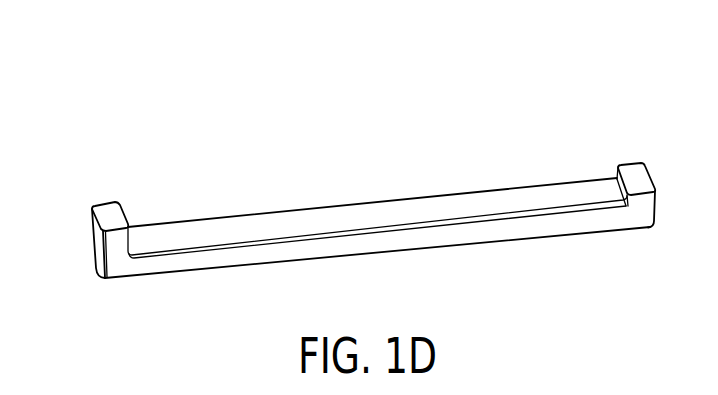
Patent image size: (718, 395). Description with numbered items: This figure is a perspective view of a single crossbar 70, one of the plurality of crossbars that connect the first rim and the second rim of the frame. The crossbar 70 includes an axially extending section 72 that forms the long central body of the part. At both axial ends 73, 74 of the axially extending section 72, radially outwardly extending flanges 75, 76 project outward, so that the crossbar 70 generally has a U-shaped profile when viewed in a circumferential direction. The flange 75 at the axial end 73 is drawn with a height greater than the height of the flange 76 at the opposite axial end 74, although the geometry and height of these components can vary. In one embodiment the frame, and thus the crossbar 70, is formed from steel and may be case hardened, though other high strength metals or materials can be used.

The crossbar 70 is at (261, 211).
The axially extending section 72 is at (412, 205).
The axial end 73 is at (117, 266).
The axial end 74 is at (650, 211).
The radially outwardly extending flange 75 is at (106, 203).
The radially outwardly extending flange 76 is at (627, 172).